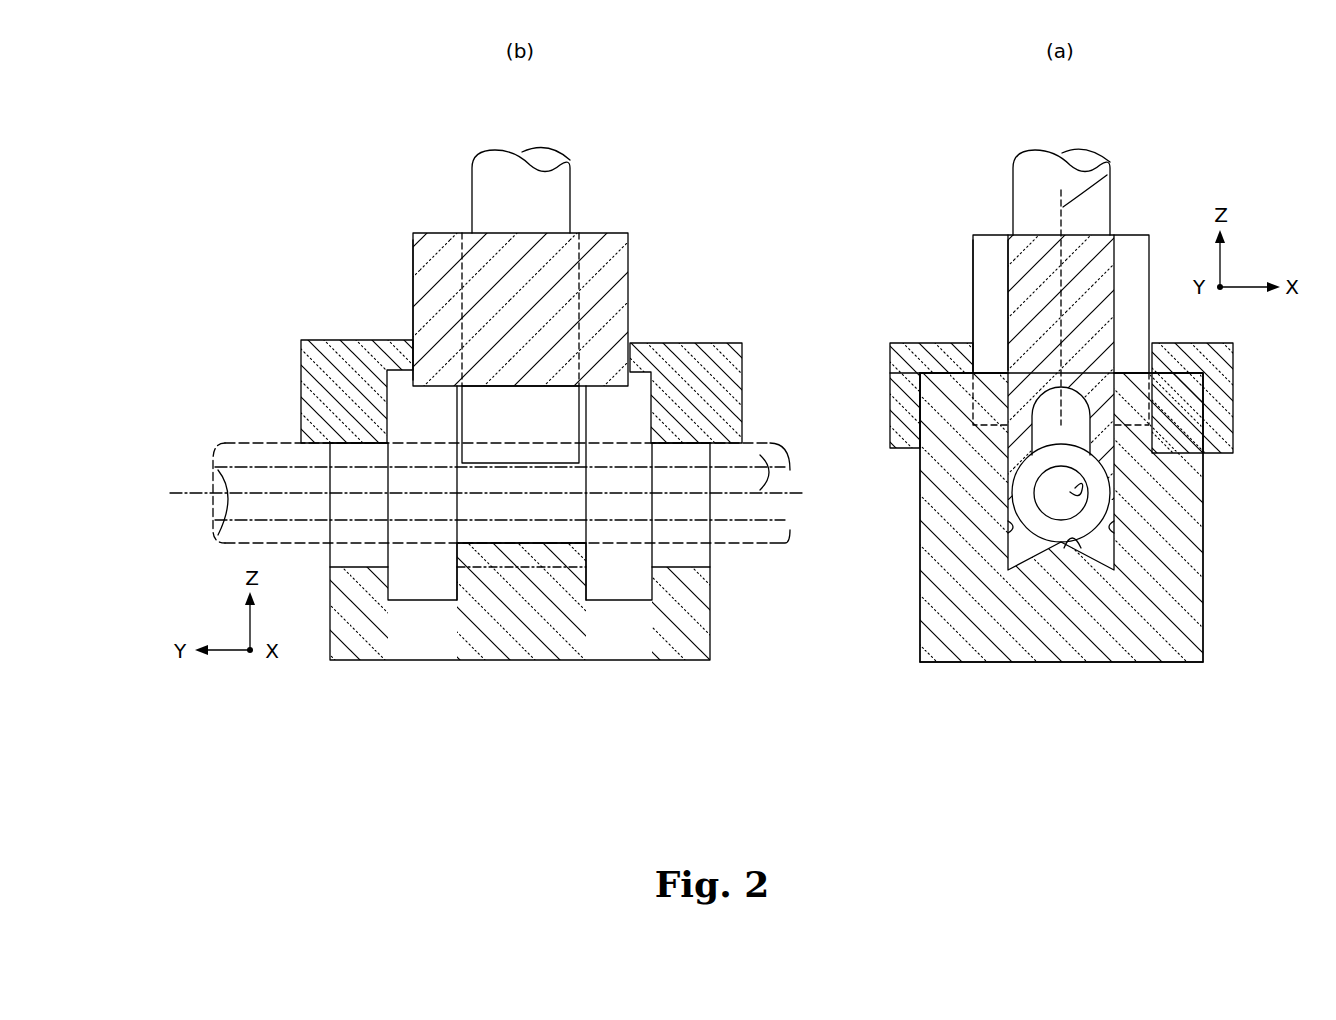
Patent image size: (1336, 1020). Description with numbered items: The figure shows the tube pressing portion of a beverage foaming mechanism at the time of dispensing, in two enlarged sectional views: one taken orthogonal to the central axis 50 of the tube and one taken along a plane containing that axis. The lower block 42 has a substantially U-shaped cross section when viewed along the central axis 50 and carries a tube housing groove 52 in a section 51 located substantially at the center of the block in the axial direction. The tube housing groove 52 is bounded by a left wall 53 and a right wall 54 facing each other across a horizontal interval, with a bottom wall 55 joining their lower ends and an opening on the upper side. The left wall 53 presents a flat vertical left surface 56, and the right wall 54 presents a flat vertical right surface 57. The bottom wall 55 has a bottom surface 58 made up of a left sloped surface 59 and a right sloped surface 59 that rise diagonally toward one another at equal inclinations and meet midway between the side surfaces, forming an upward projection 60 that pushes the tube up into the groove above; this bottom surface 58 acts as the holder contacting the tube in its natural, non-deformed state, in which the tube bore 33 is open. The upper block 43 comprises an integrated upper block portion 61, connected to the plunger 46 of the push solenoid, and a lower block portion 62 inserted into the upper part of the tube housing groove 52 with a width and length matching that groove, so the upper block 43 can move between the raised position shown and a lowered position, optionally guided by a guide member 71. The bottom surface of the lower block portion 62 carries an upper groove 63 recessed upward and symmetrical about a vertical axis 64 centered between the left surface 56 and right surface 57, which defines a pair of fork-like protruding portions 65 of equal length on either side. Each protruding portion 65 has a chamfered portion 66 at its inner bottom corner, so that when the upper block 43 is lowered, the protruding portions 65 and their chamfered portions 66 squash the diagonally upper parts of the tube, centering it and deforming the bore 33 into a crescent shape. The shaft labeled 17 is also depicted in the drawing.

The motor shaft 17 is at (770, 545).
The tube bore 33 is at (765, 468).
The lower block 42 is at (715, 668).
The upper block 43 is at (634, 233).
The plunger 46 is at (570, 160).
The central axis 50 is at (187, 490).
The section 51 is at (586, 682).
The tube housing groove 52 is at (540, 535).
The left wall 53 is at (938, 486).
The right wall 54 is at (1188, 465).
The bottom wall 55 is at (1027, 612).
The left surface 56 is at (1010, 533).
The right surface 57 is at (1090, 505).
The bottom surface 58 is at (1110, 722).
The sloped surface 59 is at (1075, 535).
The projection 60 is at (530, 595).
The upper block portion 61 is at (413, 272).
The lower block portion 62 is at (455, 415).
The upper groove 63 is at (535, 395).
The vertical axis 64 is at (1063, 205).
The protruding portion 65 is at (920, 375).
The chamfered portion 66 is at (1010, 452).
The guide member 71 is at (698, 343).